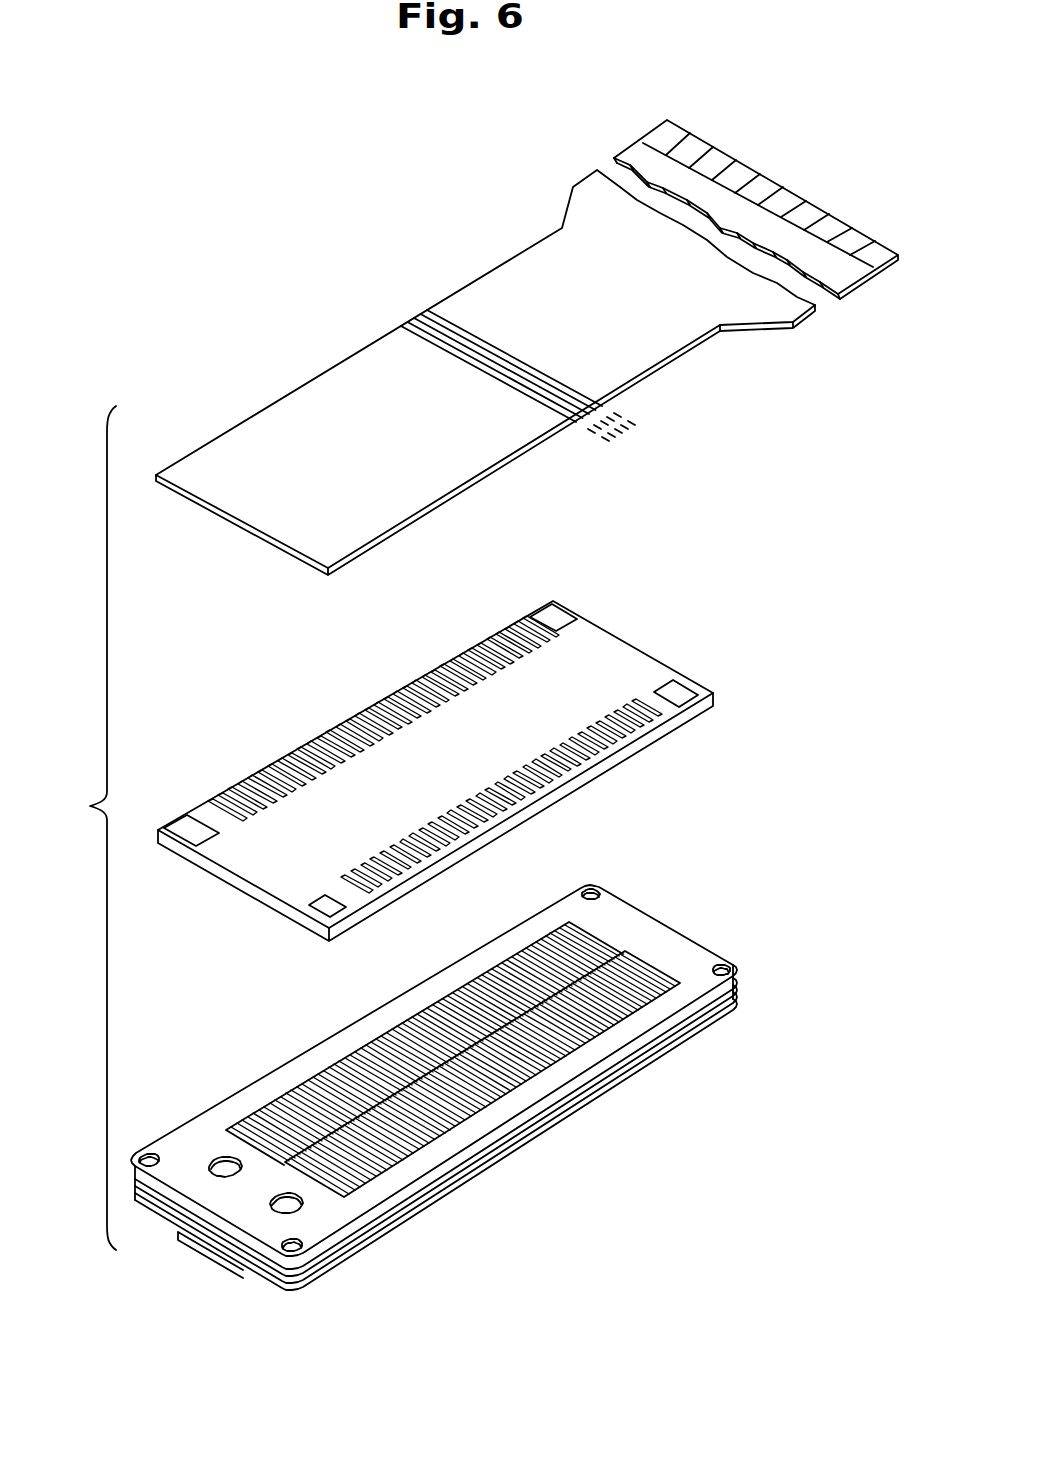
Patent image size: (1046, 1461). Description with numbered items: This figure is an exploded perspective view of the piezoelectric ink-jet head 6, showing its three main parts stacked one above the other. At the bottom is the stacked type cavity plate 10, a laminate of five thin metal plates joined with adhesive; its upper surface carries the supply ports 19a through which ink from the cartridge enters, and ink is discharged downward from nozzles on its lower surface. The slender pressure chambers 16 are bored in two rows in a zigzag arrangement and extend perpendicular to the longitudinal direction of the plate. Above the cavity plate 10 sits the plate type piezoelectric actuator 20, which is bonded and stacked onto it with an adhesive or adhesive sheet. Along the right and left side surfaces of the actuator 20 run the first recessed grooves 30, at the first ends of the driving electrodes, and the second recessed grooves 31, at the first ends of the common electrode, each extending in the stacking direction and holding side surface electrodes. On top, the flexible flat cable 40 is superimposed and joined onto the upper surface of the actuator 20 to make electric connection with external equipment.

The piezoelectric ink-jet head 6 is at (91, 828).
The cavity plate 10 is at (434, 1105).
The pressure chambers 16 is at (567, 1045).
The supply ports 19a is at (283, 1207).
The plate type piezoelectric actuator 20 is at (425, 771).
The first recessed grooves 30 is at (207, 802).
The second recessed grooves 31 is at (185, 825).
The flexible flat cable 40 is at (381, 328).